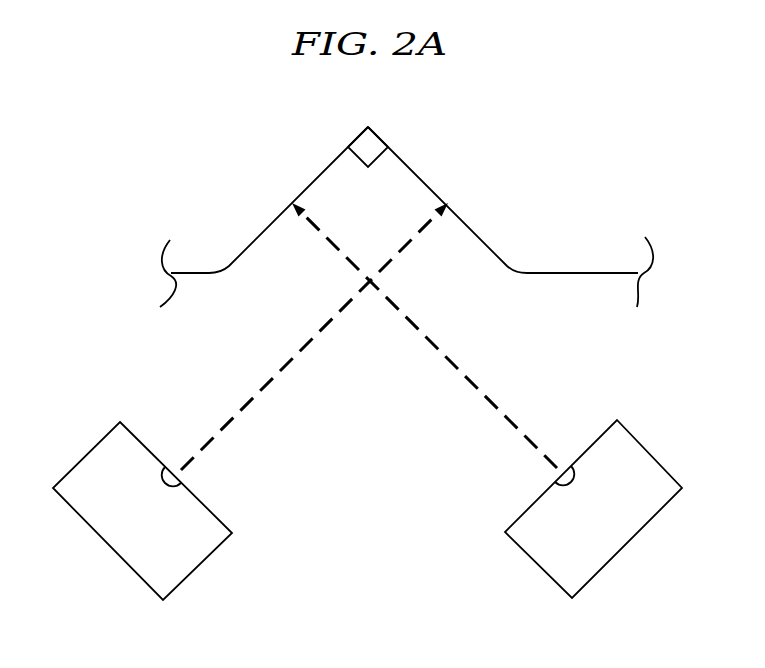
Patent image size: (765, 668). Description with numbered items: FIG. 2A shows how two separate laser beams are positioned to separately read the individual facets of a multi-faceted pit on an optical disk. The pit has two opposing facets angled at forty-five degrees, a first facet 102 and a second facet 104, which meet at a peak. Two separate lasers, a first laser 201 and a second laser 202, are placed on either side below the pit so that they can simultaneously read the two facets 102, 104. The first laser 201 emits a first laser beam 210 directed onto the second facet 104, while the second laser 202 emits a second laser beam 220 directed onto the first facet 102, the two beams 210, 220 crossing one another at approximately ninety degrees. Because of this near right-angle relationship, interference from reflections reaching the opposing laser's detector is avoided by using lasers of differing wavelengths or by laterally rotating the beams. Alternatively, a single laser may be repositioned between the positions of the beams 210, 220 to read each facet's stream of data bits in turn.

The first facet 102 is at (317, 175).
The second facet 104 is at (418, 175).
The first laser 201 is at (108, 545).
The second laser 202 is at (628, 542).
The first laser beam 210 is at (272, 380).
The second laser beam 220 is at (467, 382).